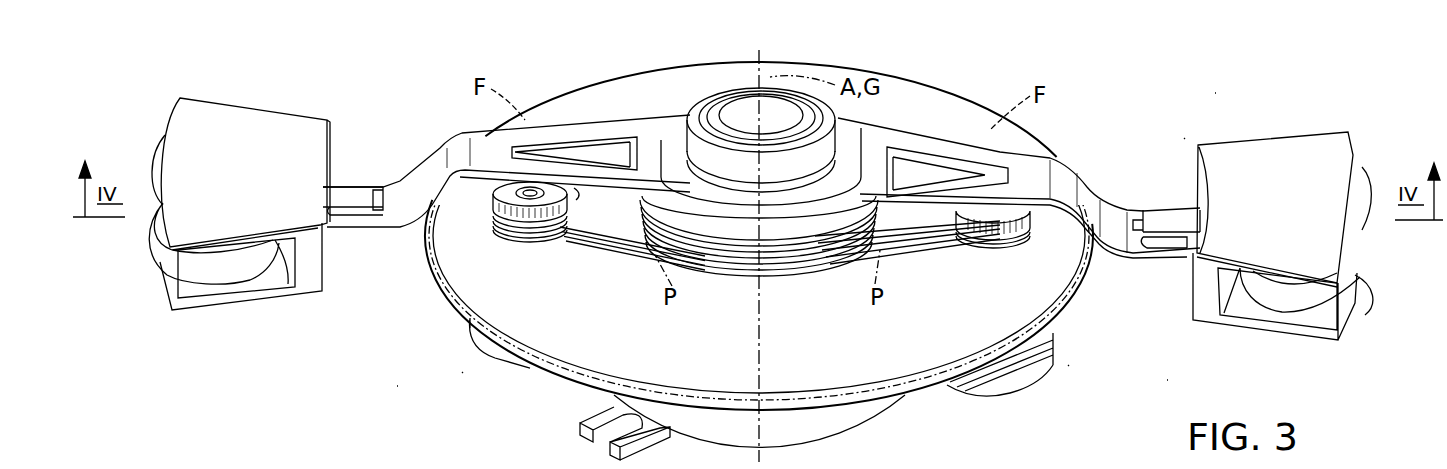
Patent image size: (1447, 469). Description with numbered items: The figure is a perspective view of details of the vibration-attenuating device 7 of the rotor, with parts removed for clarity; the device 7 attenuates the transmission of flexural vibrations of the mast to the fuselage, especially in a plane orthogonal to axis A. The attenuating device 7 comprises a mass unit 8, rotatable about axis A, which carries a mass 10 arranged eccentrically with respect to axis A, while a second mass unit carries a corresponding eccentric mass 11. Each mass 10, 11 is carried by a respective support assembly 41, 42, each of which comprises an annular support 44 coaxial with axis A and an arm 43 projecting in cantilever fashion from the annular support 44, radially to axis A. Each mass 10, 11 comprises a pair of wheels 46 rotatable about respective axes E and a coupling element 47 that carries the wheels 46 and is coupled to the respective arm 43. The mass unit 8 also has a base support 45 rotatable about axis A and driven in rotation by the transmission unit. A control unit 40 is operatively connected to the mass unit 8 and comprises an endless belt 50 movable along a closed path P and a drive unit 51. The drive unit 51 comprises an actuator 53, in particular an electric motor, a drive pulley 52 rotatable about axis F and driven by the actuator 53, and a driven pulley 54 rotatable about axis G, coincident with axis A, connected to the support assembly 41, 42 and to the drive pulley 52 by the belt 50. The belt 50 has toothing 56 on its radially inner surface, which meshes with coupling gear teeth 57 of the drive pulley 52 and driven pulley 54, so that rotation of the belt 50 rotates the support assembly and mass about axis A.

The vibration-attenuating device 7 is at (1215, 93).
The mass unit 8 is at (1184, 138).
The mass 10 is at (160, 313).
The mass 11 is at (1292, 345).
The control unit 40 is at (397, 386).
The support assembly 41 is at (575, 120).
The support assembly 42 is at (902, 262).
The arm 43 is at (480, 140).
The annular support 44 is at (668, 150).
The base support 45 is at (553, 367).
The wheels 46 is at (158, 148).
The coupling element 47 is at (282, 128).
The belt 50 is at (613, 263).
The drive unit 51 is at (462, 372).
The drive pulley 52 is at (473, 213).
The actuator 53 is at (478, 338).
The driven pulley 54 is at (722, 282).
The toothing 56 is at (577, 192).
The coupling gear teeth 57 is at (548, 240).